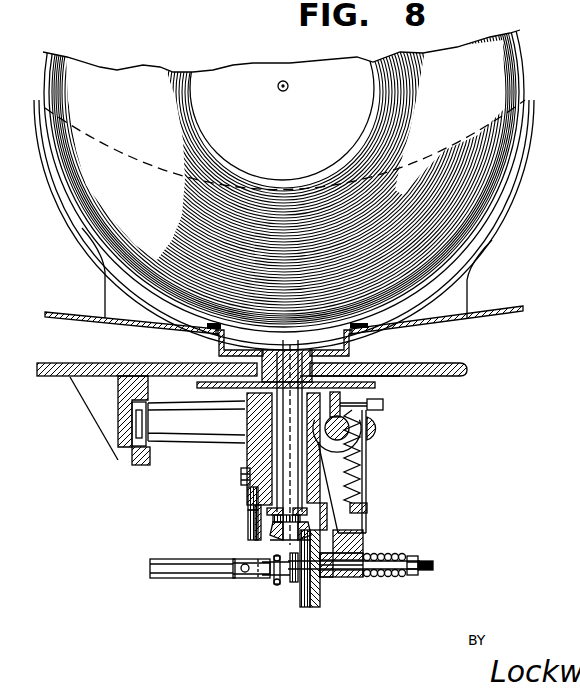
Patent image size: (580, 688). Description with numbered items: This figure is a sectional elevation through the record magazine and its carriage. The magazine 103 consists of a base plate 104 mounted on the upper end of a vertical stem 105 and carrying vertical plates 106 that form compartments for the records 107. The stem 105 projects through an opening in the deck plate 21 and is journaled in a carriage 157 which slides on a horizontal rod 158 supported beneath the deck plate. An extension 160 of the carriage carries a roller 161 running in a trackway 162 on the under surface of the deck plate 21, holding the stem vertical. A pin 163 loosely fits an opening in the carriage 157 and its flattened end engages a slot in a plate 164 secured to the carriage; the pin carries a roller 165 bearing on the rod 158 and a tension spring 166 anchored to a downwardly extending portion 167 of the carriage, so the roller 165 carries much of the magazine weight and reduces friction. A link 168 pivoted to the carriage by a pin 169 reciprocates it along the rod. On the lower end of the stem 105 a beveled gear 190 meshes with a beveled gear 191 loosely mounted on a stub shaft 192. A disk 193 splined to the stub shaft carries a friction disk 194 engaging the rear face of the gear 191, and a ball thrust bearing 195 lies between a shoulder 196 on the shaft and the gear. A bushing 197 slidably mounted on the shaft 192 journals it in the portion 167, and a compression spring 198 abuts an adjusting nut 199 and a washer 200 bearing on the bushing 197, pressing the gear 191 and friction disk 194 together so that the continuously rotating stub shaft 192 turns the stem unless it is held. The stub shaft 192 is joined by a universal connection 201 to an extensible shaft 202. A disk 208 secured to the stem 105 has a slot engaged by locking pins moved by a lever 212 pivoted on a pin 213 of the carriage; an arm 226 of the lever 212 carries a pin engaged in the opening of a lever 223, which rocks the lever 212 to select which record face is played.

The deck plate 21 is at (455, 374).
The magazine 103 is at (470, 140).
The base plate 104 is at (498, 310).
The vertical stem 105 is at (278, 353).
The vertical plates 106 is at (484, 246).
The records 107 is at (522, 80).
The carriage 157 is at (247, 454).
The horizontal rod 158 is at (345, 438).
The extension 160 is at (187, 437).
The roller 161 is at (140, 455).
The trackway 162 is at (118, 443).
The pin 163 is at (384, 405).
The plate 164 is at (375, 436).
The roller 165 is at (352, 378).
The tension spring 166 is at (352, 458).
The downwardly extending portion 167 is at (362, 545).
The link 168 is at (358, 515).
The pin 169 is at (333, 468).
The beveled gear 190 is at (272, 546).
The beveled gear 191 is at (304, 606).
The stub shaft 192 is at (353, 570).
The disk 193 is at (327, 608).
The friction disk 194 is at (314, 608).
The ball thrust bearing 195 is at (293, 584).
The shoulder 196 is at (276, 584).
The bushing 197 is at (335, 582).
The compression spring 198 is at (397, 580).
The adjusting nut 199 is at (415, 560).
The washer 200 is at (368, 578).
The universal connection 201 is at (262, 580).
The extensible shaft 202 is at (186, 580).
The disk 208 is at (205, 388).
The lever 212 is at (247, 493).
The pin 213 is at (243, 482).
The lever 223 is at (248, 535).
The arm 226 is at (247, 512).